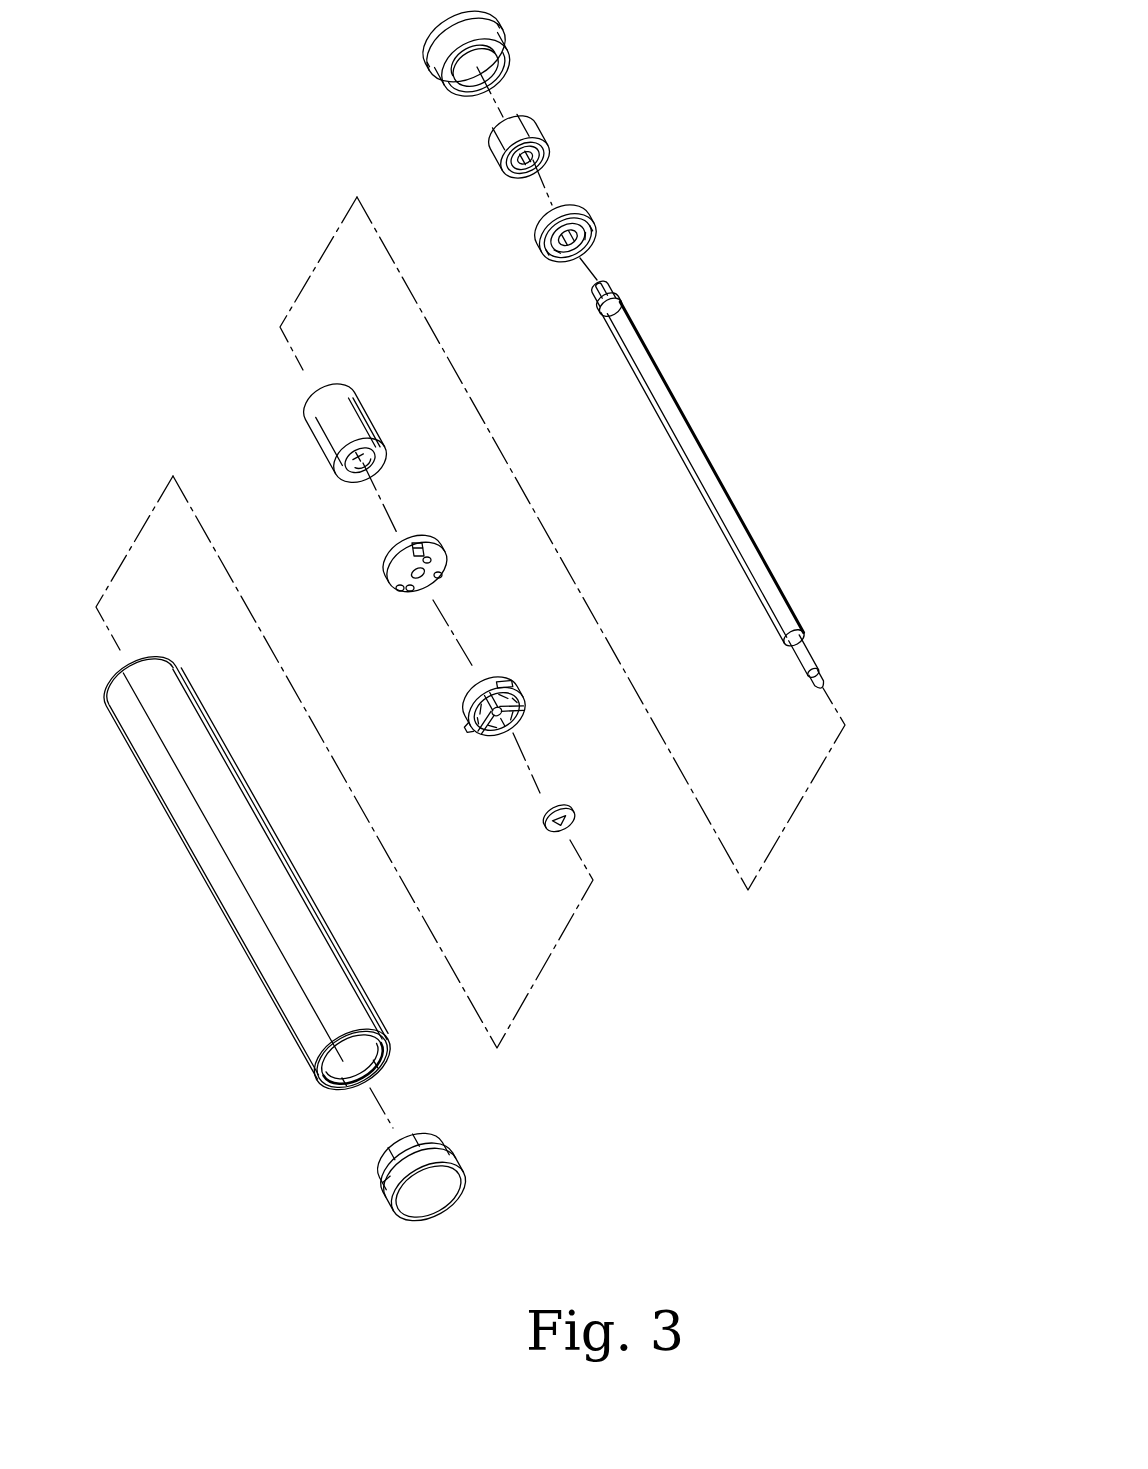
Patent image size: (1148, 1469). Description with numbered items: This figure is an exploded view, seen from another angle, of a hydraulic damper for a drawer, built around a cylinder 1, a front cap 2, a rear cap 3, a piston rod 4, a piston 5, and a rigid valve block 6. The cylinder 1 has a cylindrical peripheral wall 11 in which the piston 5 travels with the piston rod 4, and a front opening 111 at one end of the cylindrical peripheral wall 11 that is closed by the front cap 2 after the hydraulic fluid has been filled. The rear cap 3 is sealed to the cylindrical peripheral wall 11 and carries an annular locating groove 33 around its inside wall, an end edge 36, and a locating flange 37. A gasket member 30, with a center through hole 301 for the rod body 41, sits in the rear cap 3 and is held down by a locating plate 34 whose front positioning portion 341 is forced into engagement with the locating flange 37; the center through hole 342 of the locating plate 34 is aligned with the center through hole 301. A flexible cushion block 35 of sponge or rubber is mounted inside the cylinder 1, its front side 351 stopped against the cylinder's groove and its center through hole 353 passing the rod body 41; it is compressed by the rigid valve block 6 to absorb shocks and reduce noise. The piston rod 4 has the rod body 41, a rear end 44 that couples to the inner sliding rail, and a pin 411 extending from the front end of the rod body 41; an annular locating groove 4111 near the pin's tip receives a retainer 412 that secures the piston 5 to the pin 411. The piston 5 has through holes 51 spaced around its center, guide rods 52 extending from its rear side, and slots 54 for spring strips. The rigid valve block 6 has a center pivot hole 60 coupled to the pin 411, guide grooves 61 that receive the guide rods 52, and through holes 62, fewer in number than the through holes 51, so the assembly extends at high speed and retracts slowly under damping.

The cylinder 1 is at (247, 911).
The cylindrical peripheral wall 11 is at (335, 1048).
The front opening 111 is at (347, 1082).
The front cap 2 is at (368, 1222).
The rear cap 3 is at (451, 82).
The annular locating groove 33 is at (475, 72).
The end edge 36 is at (453, 88).
The locating flange 37 is at (495, 70).
The gasket member 30 is at (575, 126).
The center through hole 301 is at (553, 160).
The locating plate 34 is at (610, 254).
The front positioning portion 341 is at (593, 220).
The center through hole 342 is at (587, 248).
The cushion block 35 is at (350, 450).
The front side 351 is at (330, 483).
The center through hole 353 is at (367, 457).
The piston rod 4 is at (766, 483).
The rod body 41 is at (693, 433).
The pin 411 is at (820, 657).
The annular locating groove 4111 is at (823, 668).
The retainer 412 is at (547, 833).
The rear end 44 is at (613, 300).
The piston 5 is at (496, 719).
The through holes 51 is at (520, 678).
The guide rods 52 is at (513, 672).
The slots 54 is at (493, 697).
The rigid valve block 6 is at (402, 571).
The center pivot hole 60 is at (413, 575).
The guide grooves 61 is at (400, 557).
The through holes 62 is at (417, 543).